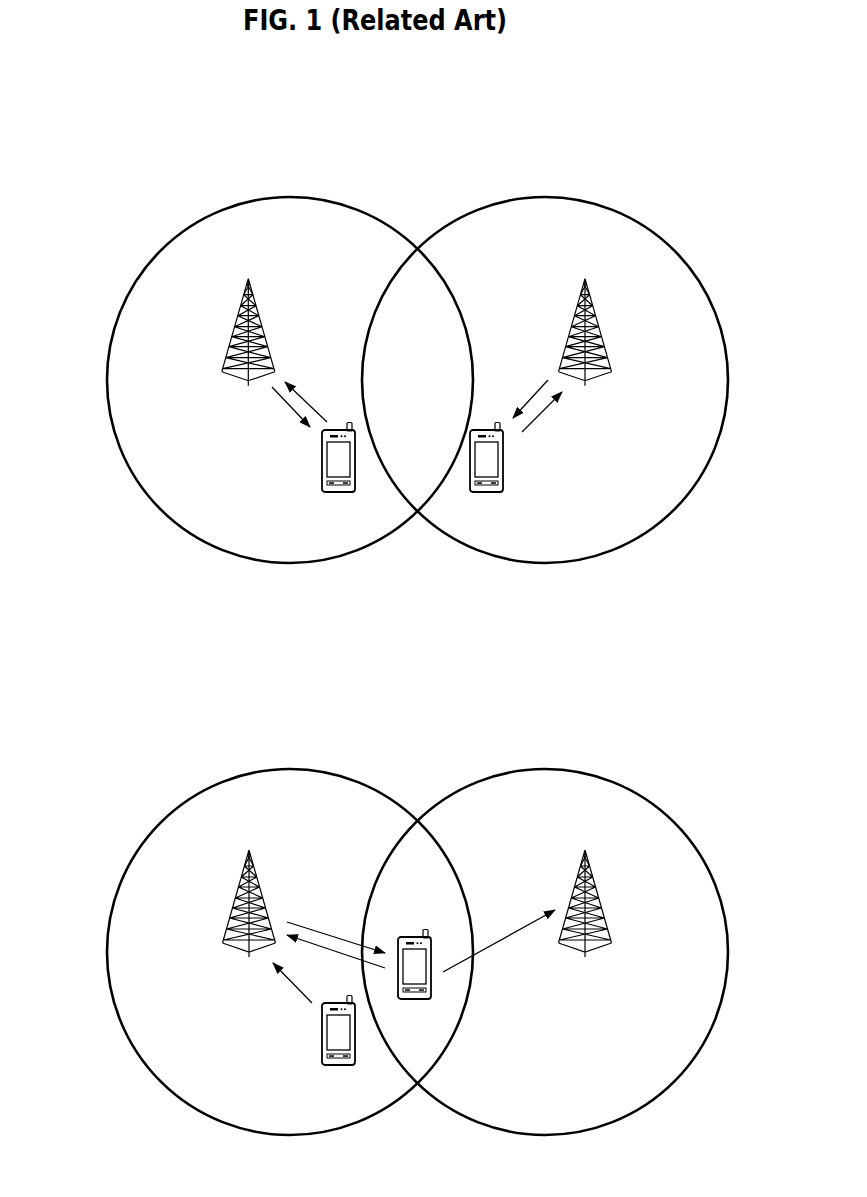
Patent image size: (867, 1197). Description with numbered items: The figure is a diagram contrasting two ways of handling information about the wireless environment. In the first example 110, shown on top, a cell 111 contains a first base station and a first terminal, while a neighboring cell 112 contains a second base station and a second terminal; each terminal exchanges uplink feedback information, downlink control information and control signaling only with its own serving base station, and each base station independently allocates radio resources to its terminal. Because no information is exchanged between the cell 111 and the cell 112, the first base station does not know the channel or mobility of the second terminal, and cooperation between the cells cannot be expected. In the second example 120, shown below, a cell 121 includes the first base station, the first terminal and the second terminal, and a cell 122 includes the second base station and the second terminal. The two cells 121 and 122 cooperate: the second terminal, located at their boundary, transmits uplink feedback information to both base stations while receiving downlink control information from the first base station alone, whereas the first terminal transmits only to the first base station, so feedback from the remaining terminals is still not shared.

The first example 110 is at (378, 333).
The cell 111 is at (290, 197).
The cell 112 is at (540, 198).
The second example 120 is at (378, 904).
The cell 121 is at (288, 769).
The cell 122 is at (545, 769).